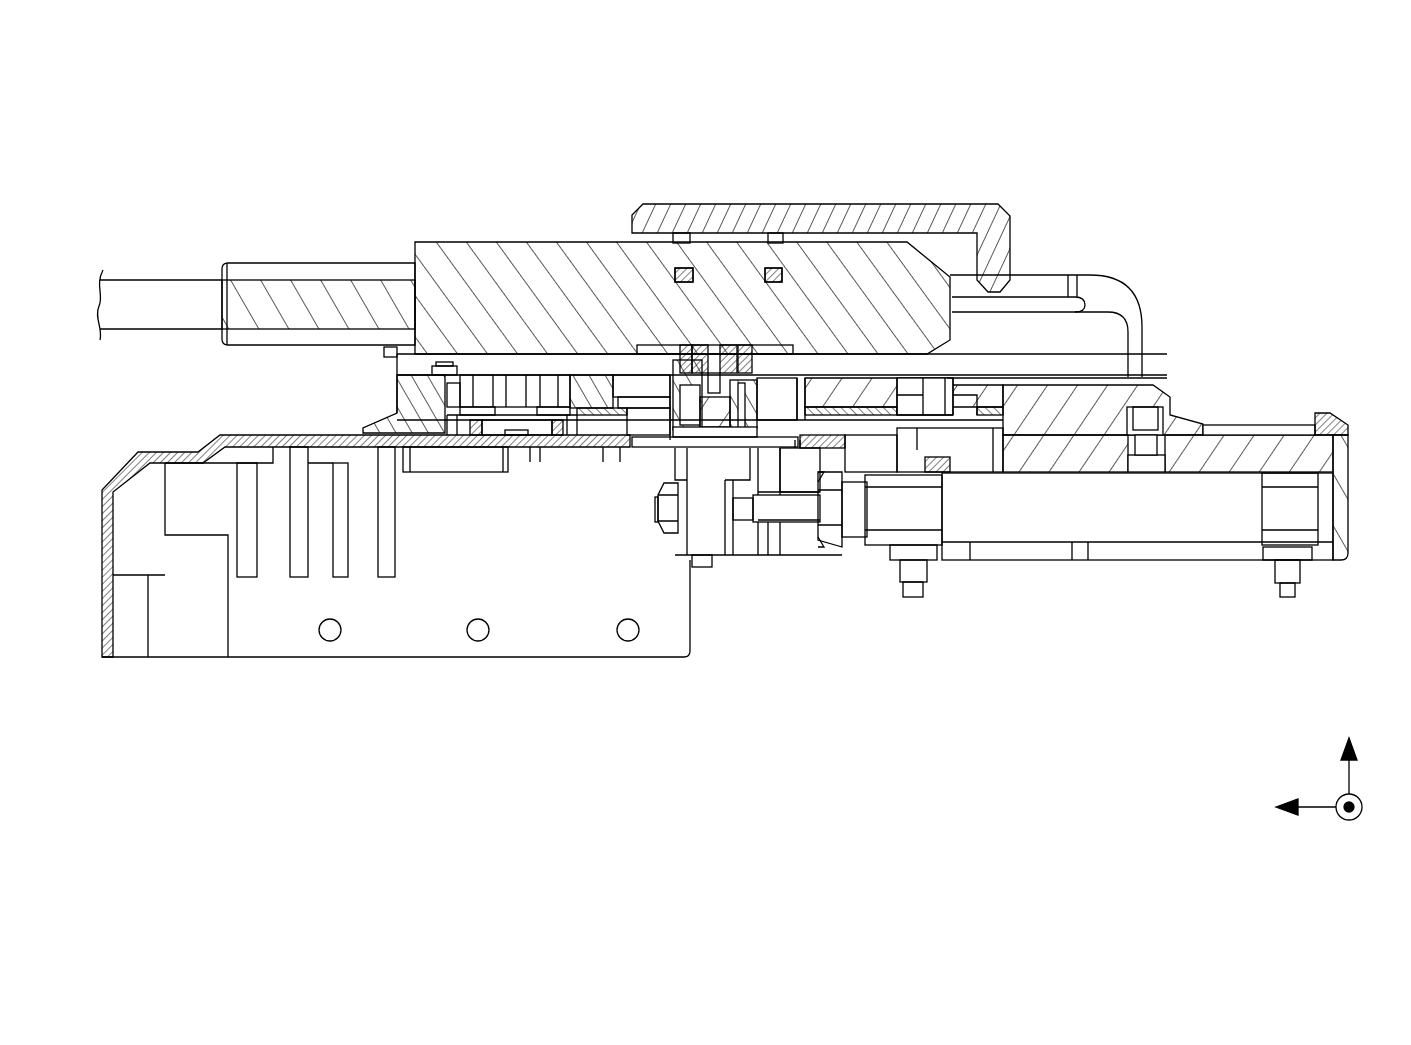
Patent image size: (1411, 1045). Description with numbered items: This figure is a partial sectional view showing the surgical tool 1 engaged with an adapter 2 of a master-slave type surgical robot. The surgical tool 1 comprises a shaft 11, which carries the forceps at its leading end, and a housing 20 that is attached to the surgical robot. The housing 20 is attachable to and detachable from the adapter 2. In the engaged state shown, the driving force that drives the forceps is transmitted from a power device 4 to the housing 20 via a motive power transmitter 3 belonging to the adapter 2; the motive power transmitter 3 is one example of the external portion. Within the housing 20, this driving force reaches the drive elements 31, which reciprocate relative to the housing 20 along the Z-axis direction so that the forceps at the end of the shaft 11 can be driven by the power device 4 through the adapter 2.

The surgical tool 1 is at (276, 164).
The shaft 11 is at (148, 280).
The housing 20 is at (512, 242).
The drive elements 31 is at (728, 345).
The adapter 2 is at (1100, 275).
The motive power transmitter 3 is at (672, 412).
The power device 4 is at (710, 560).